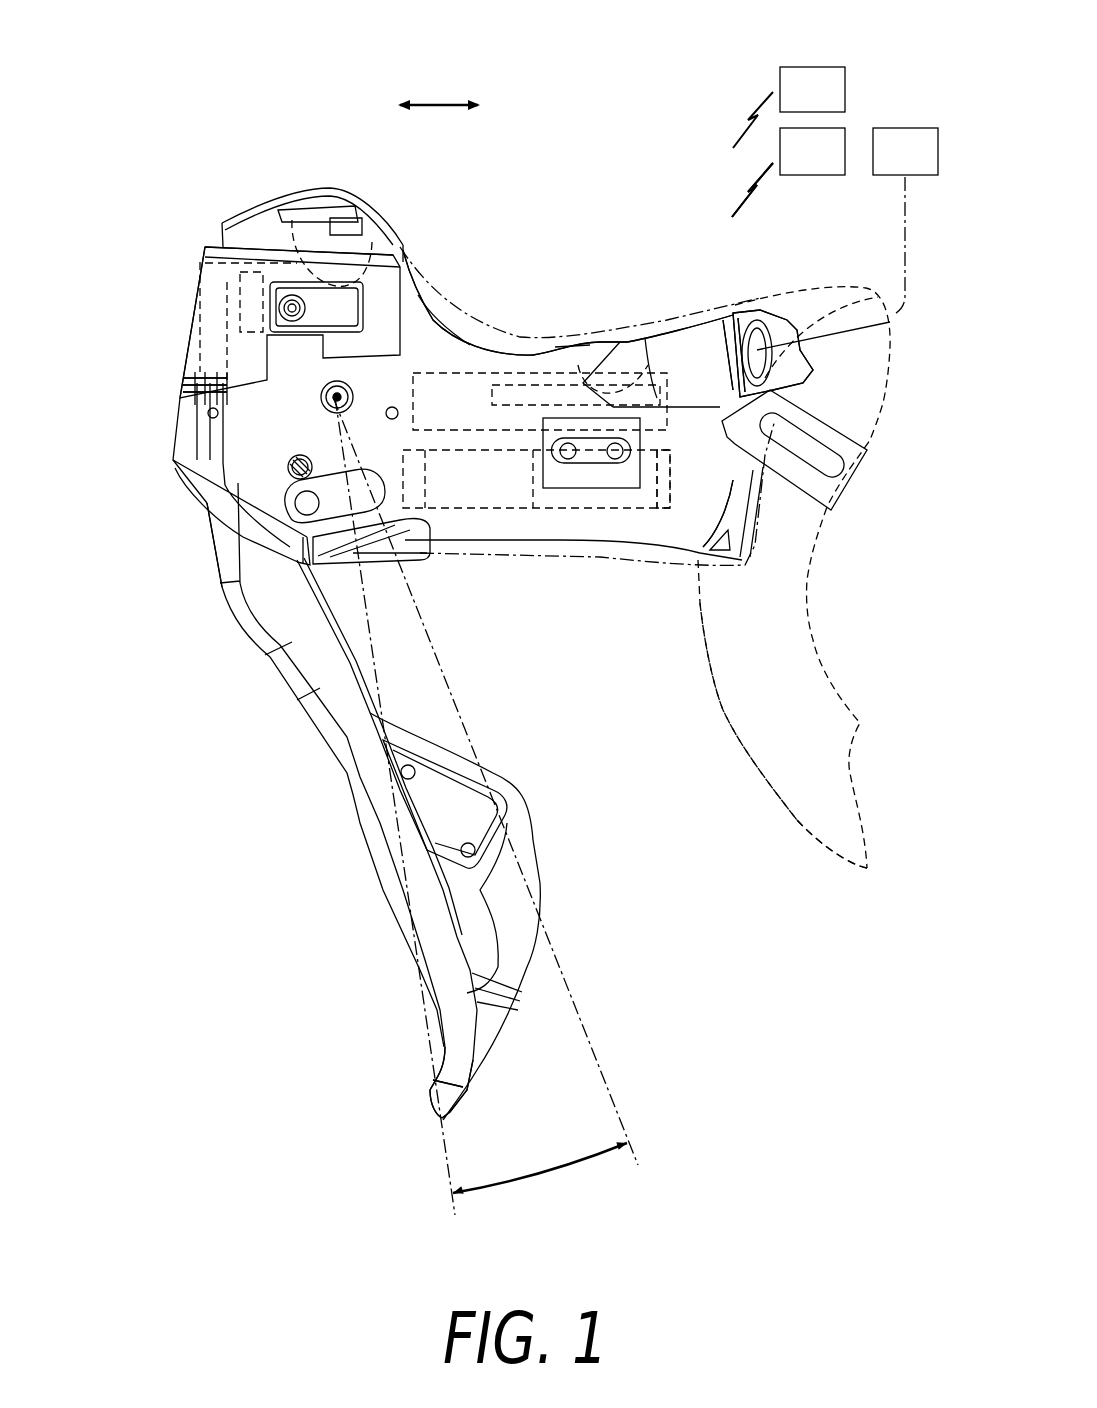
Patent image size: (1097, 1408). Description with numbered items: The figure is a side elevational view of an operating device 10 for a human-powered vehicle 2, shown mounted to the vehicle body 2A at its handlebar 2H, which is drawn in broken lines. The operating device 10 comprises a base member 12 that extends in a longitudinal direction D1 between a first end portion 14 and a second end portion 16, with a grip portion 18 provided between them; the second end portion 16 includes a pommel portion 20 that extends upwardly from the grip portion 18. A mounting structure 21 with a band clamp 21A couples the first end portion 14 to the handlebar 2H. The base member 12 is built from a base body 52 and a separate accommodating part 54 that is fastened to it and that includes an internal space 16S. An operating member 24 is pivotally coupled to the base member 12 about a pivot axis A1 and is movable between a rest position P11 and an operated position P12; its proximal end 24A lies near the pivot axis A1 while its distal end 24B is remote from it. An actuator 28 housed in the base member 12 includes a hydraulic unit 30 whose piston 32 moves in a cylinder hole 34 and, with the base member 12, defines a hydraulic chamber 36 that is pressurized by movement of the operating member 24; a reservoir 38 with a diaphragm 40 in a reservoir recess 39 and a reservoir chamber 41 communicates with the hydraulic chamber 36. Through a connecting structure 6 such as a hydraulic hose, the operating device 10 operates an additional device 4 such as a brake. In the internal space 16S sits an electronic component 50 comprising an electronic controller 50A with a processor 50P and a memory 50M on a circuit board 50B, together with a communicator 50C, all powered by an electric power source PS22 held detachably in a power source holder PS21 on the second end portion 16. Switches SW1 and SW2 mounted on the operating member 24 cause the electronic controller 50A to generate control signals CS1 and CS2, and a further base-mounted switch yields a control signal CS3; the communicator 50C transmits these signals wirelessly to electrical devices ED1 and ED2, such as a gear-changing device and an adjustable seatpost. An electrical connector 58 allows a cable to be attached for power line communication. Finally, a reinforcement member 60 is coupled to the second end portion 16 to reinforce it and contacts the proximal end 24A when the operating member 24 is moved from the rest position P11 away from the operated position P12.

The human-powered vehicle 2 is at (622, 68).
The vehicle body 2A is at (750, 758).
The handlebar 2H is at (797, 817).
The additional device 4 is at (916, 166).
The connecting structure 6 is at (912, 243).
The operating device 10 is at (653, 172).
The base member 12 is at (607, 160).
The first end portion 14 is at (733, 313).
The second end portion 16 is at (404, 240).
The grip portion 18 is at (497, 368).
The pommel portion 20 is at (358, 200).
The mounting structure 21 is at (853, 500).
The band clamp 21A is at (853, 460).
The operating member 24 is at (338, 793).
The proximal end 24A is at (213, 543).
The distal end portion of operating member 24B is at (433, 1103).
The actuator 28 is at (480, 513).
The hydraulic unit 30 is at (510, 512).
The piston 32 is at (543, 495).
The cylinder hole 34 is at (598, 497).
The hydraulic chamber 36 is at (655, 487).
The reservoir 38 is at (560, 368).
The reservoir recess 39 is at (600, 393).
The diaphragm 40 is at (515, 405).
The reservoir chamber 41 is at (465, 400).
The base body 52 is at (443, 318).
The accommodating part 54 is at (191, 287).
The electrical connector 58 is at (570, 490).
The reinforcement member 60 is at (173, 461).
The electronic component 50 is at (103, 287).
The electronic controller 50A is at (228, 353).
The circuit board 50B is at (208, 290).
The communicator 50C is at (260, 333).
The processor 50P is at (222, 383).
The memory 50M is at (168, 388).
The internal space 16S is at (235, 295).
The pivot axis A1 is at (337, 398).
The longitudinal direction D1 is at (442, 104).
The rest position P11 is at (443, 1157).
The operated position P12 is at (620, 1110).
The power source holder PS21 is at (216, 236).
The electric power source PS22 is at (337, 210).
The switch SW1 is at (533, 793).
The switch SW2 is at (400, 718).
The control signal CS1 is at (735, 210).
The control signal CS2 is at (784, 211).
The control signal CS3 is at (752, 108).
The electrical device ED1 is at (836, 165).
The electrical device ED2 is at (836, 104).